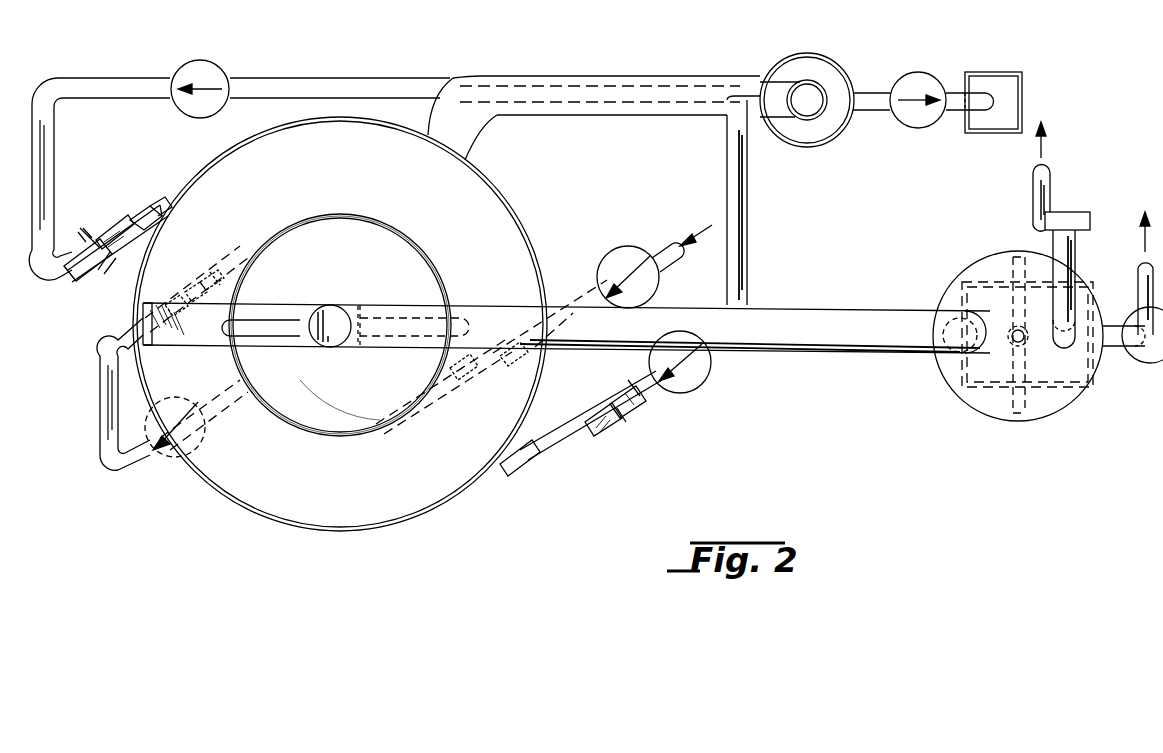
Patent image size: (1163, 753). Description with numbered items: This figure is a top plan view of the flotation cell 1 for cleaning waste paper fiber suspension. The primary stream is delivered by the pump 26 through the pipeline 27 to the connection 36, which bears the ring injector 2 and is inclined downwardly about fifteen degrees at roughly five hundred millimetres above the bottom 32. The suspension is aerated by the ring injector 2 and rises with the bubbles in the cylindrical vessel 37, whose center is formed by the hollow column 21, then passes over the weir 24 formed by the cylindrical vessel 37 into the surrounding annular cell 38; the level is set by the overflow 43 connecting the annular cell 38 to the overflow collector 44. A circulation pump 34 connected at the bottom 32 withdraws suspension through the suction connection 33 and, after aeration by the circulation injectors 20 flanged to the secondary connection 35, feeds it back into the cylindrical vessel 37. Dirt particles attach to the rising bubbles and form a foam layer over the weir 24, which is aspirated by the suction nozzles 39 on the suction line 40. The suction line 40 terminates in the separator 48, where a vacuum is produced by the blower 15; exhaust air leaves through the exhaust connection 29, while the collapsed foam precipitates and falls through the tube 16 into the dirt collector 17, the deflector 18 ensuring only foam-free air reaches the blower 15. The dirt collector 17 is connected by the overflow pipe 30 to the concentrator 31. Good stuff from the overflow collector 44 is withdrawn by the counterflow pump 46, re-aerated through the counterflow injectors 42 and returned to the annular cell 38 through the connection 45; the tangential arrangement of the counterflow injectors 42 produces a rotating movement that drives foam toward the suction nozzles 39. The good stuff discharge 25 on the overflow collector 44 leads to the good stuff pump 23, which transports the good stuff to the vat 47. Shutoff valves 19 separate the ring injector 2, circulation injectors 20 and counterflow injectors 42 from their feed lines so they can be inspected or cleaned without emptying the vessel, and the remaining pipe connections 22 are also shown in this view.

The flotation cell 1 is at (240, 549).
The ring injector 2 is at (520, 320).
The blower 15 is at (1072, 214).
The tube 16 is at (1025, 342).
The dirt collector 17 is at (984, 392).
The deflector 18 is at (1010, 270).
The shutoff valve 19 is at (140, 218).
The circulation injector 20 is at (178, 340).
The hollow column 21 is at (357, 348).
The pipe line 22 is at (405, 78).
The good stuff pump 23 is at (922, 128).
The weir 24 is at (440, 266).
The good stuff discharge 25 is at (877, 112).
The pump 26 is at (616, 262).
The pipeline 27 is at (578, 306).
The exhaust connection 29 is at (1032, 204).
The overflow pipe 30 is at (1098, 372).
The concentrator 31 is at (1150, 362).
The bottom 32 is at (326, 410).
The suction connection 33 is at (237, 396).
The circulation pump 34 is at (168, 455).
The secondary connection 35 is at (236, 262).
The connection 36 is at (448, 394).
The cylindrical vessel 37 is at (370, 438).
The annular cell 38 is at (340, 528).
The suction nozzle 39 is at (281, 305).
The suction line 40 is at (837, 342).
The counterflow injector 42 is at (96, 268).
The overflow 43 is at (806, 120).
The overflow collector 44 is at (840, 68).
The connection 45 is at (166, 200).
The counterflow pump 46 is at (193, 68).
The vat 47 is at (1000, 80).
The separator 48 is at (1052, 402).